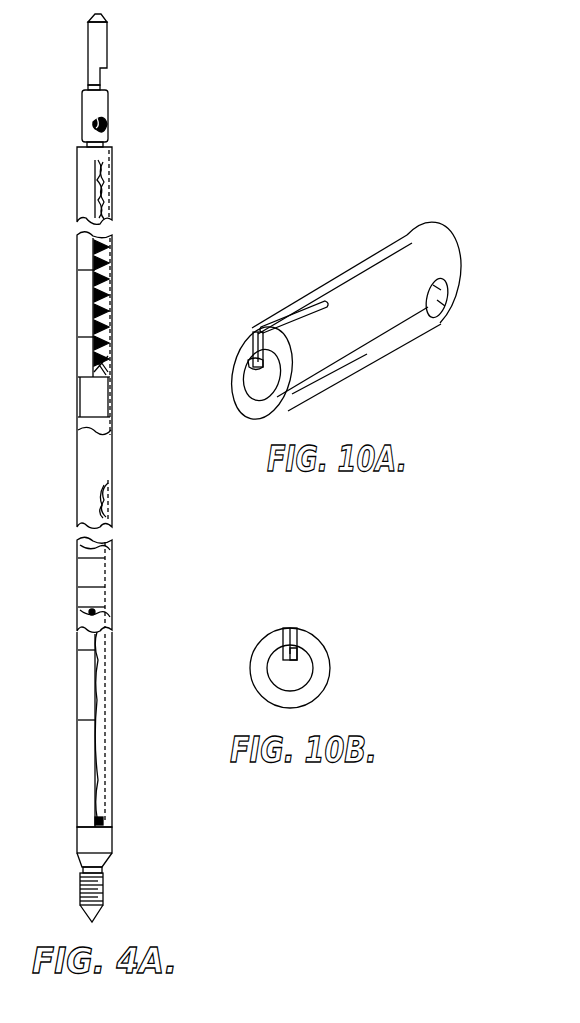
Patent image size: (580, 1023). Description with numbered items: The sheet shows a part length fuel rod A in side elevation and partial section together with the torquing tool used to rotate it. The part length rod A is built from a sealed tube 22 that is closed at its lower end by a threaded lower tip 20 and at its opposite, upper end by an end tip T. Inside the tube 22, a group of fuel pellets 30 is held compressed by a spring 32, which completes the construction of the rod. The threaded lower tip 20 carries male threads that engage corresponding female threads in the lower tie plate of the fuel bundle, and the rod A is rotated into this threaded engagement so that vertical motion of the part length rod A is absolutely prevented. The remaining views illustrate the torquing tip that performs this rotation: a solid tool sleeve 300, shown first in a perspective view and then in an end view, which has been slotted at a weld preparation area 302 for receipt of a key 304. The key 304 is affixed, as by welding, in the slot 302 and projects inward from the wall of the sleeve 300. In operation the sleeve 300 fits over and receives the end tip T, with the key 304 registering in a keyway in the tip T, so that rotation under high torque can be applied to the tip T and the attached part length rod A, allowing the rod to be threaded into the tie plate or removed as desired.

In FIG. 4A, the end tip T is at (107, 44).
In FIG. 4A, the sealed tube 22 is at (112, 206).
In FIG. 4A, the spring 32 is at (113, 310).
In FIG. 4A, the part length rod A is at (77, 478).
In FIG. 4A, the fuel pellets 30 is at (77, 587).
In FIG. 4A, the threaded lower tip 20 is at (78, 888).
In FIG. 10A, the tool sleeve 300 is at (363, 358).
In FIG. 10B, the tool sleeve 300 is at (329, 684).
In FIG. 10A, the slot 302 is at (256, 330).
In FIG. 10B, the slot 302 is at (289, 630).
In FIG. 10A, the key 304 is at (250, 366).
In FIG. 10B, the key 304 is at (297, 655).